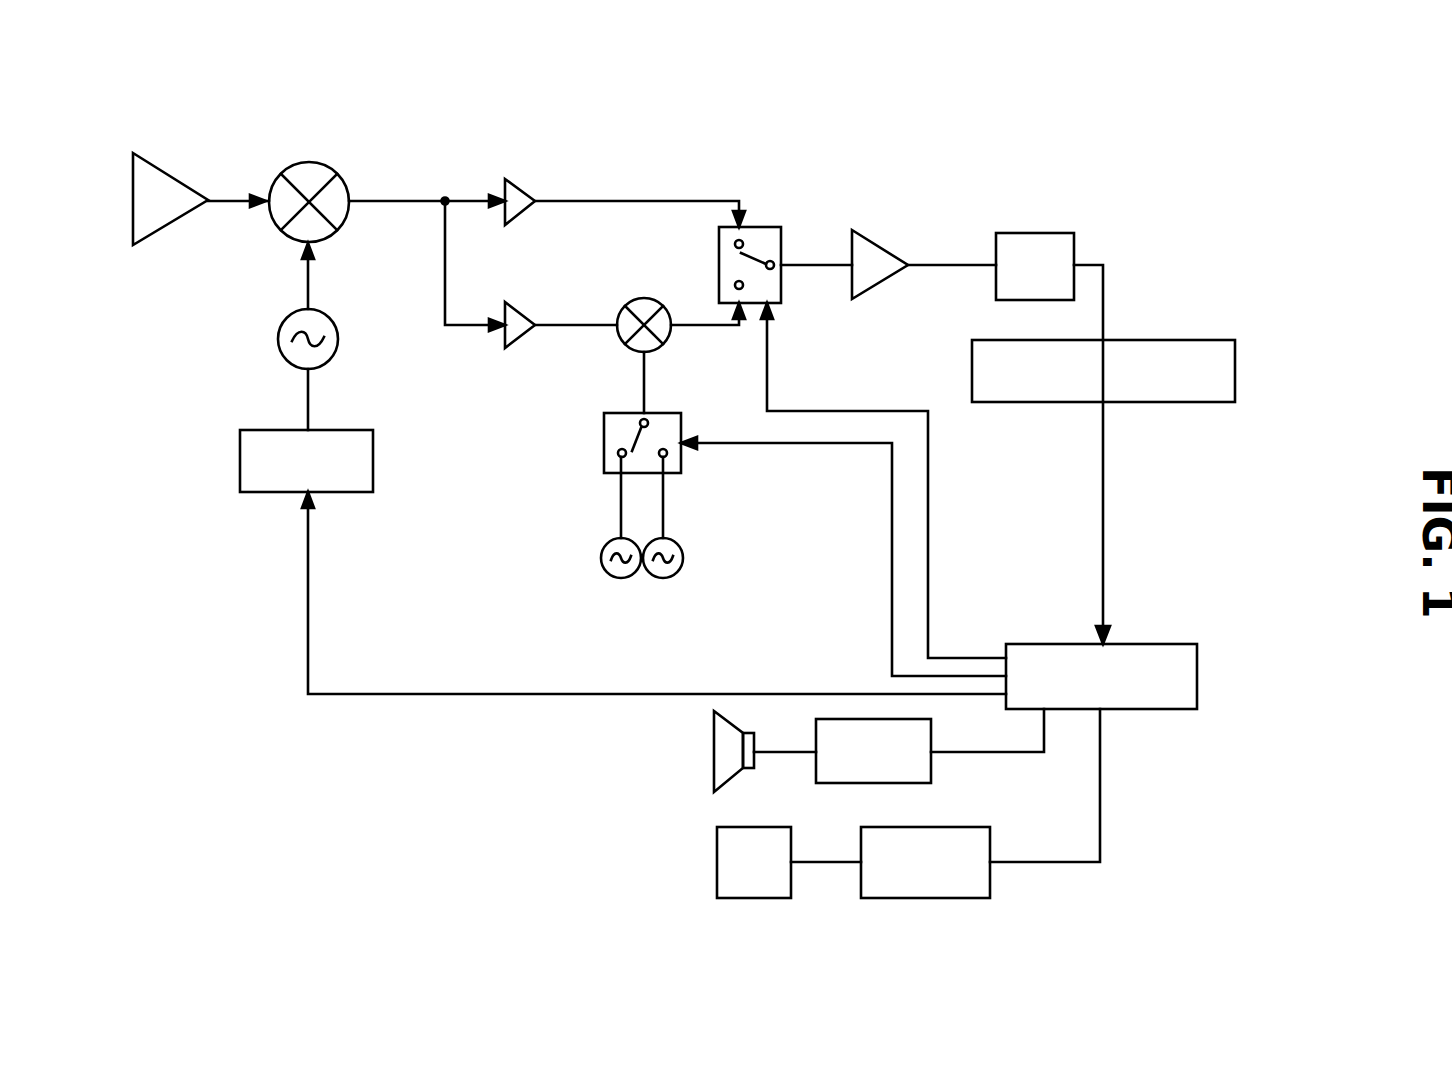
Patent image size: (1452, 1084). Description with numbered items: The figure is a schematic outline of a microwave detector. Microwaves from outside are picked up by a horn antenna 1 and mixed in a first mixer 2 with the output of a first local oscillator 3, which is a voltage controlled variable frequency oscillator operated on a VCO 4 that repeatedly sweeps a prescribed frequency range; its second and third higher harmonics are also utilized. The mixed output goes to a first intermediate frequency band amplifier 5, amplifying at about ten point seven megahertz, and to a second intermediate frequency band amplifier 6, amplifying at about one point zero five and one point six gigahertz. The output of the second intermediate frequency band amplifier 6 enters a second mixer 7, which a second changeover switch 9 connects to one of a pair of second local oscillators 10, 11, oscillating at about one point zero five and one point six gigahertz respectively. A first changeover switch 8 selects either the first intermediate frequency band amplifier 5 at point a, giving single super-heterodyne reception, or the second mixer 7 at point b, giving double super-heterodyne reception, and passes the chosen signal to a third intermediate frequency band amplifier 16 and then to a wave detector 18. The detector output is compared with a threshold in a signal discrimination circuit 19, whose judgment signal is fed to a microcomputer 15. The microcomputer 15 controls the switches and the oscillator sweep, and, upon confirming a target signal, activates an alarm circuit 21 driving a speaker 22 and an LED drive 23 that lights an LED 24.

The horn antenna 1 is at (170, 173).
The first mixer 2 is at (350, 187).
The first local oscillator 3 is at (322, 312).
The VCO 4 is at (240, 461).
The first intermediate frequency band amplifier 5 is at (527, 195).
The second intermediate frequency band amplifier 6 is at (520, 335).
The second mixer 7 is at (644, 298).
The first changeover switch 8 is at (768, 227).
The second changeover switch 9 is at (604, 445).
The second local oscillator 10 is at (602, 558).
The second local oscillator 11 is at (683, 562).
The microcomputer 15 is at (1197, 678).
The third intermediate frequency band amplifier 16 is at (870, 283).
The wave detector 18 is at (1038, 233).
The signal discrimination circuit 19 is at (1235, 372).
The alarm circuit 21 is at (931, 770).
The speaker 22 is at (712, 760).
The LED drive 23 is at (931, 898).
The LED 24 is at (755, 898).